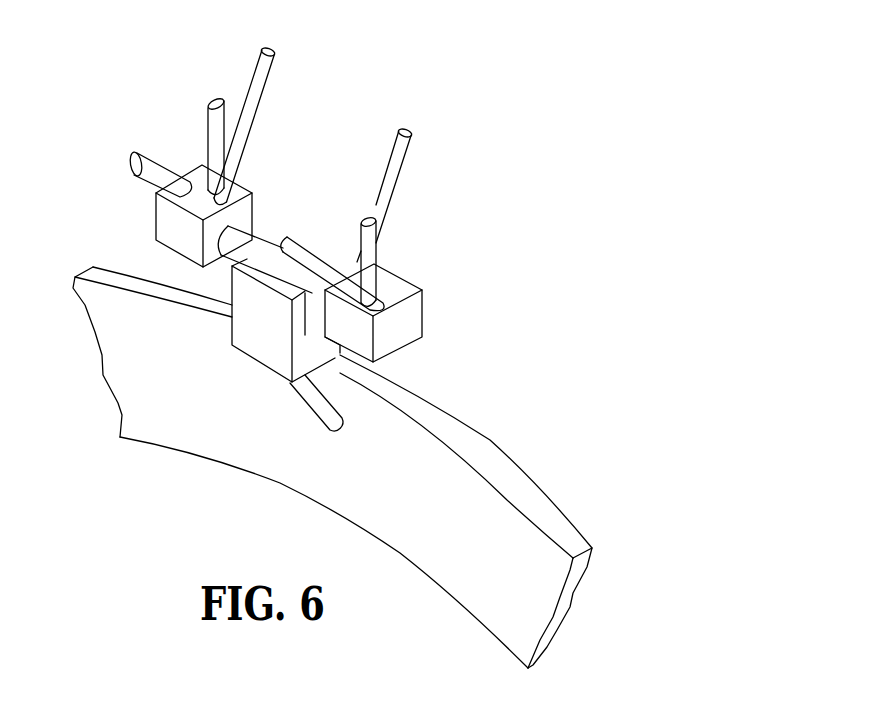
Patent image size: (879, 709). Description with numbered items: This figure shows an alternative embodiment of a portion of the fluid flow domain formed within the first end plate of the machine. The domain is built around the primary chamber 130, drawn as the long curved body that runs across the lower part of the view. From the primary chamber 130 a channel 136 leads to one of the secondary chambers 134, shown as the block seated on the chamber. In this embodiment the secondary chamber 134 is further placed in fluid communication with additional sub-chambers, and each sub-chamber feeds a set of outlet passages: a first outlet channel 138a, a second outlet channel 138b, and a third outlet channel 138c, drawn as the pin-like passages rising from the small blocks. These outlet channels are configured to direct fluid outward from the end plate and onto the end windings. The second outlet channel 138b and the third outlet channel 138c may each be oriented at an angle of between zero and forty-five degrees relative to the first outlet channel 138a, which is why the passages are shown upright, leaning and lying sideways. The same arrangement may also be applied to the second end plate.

The primary chamber 130 is at (510, 475).
The secondary chamber 134 is at (257, 362).
The channel 136 is at (305, 398).
The first outlet channel 138a is at (205, 142).
The second outlet channel 138b is at (161, 159).
The third outlet channel 138c is at (262, 93).